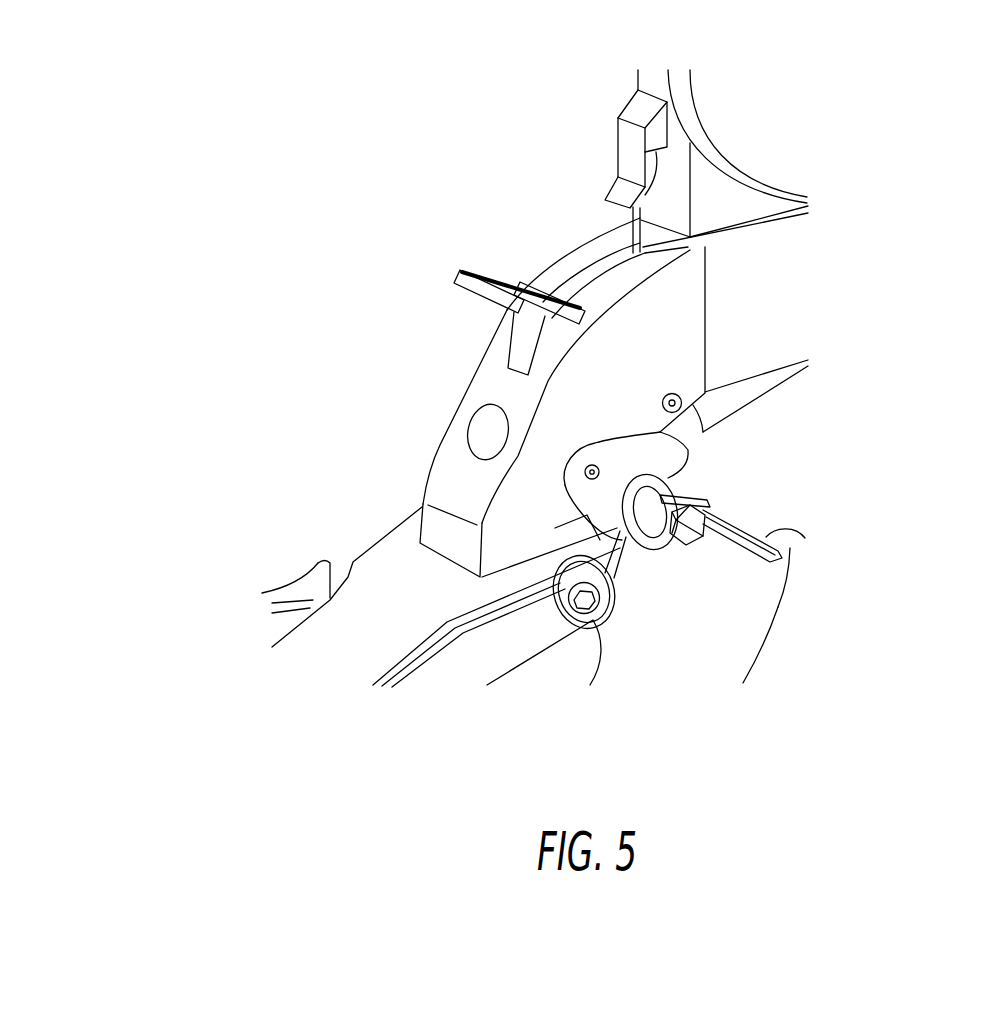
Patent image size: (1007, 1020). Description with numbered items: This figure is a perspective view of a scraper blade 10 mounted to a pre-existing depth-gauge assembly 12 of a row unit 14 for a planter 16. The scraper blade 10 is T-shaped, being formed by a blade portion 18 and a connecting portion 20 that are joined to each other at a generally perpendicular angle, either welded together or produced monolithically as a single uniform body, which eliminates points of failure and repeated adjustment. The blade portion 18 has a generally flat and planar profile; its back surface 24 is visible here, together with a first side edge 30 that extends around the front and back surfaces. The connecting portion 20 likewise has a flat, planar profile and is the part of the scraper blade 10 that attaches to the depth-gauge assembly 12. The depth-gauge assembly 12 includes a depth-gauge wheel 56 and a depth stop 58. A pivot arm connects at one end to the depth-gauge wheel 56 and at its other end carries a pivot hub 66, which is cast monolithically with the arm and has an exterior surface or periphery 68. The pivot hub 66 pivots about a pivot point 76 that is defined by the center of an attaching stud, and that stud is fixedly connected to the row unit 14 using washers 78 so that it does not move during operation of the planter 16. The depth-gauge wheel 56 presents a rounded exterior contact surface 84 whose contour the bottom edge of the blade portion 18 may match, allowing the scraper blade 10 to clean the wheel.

The scraper blade 10 is at (713, 600).
The depth-gauge assembly 12 is at (395, 277).
The row unit 14 is at (308, 438).
The planter 16 is at (897, 125).
The blade portion 18 is at (772, 603).
The connecting portion 20 is at (670, 547).
The back surface 24 is at (738, 542).
The first side edge 30 is at (768, 582).
The depth-gauge wheel 56 is at (770, 663).
The depth stop 58 is at (505, 287).
The pivot hub 66 is at (603, 446).
The exterior surface or periphery 68 is at (594, 510).
The pivot point 76 is at (688, 535).
The washer 78 is at (683, 492).
The contact surface 84 is at (647, 662).